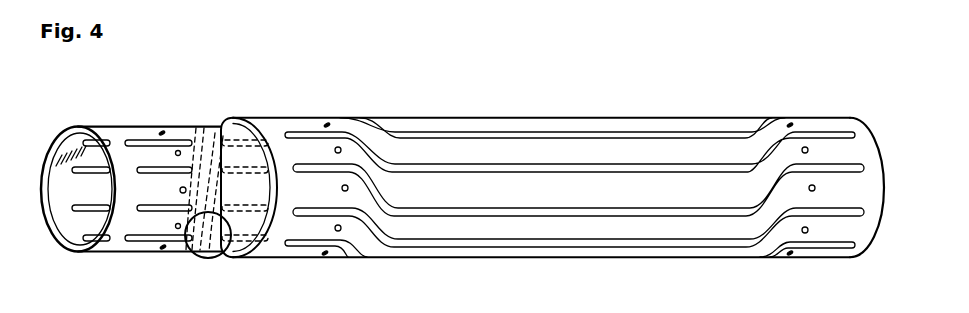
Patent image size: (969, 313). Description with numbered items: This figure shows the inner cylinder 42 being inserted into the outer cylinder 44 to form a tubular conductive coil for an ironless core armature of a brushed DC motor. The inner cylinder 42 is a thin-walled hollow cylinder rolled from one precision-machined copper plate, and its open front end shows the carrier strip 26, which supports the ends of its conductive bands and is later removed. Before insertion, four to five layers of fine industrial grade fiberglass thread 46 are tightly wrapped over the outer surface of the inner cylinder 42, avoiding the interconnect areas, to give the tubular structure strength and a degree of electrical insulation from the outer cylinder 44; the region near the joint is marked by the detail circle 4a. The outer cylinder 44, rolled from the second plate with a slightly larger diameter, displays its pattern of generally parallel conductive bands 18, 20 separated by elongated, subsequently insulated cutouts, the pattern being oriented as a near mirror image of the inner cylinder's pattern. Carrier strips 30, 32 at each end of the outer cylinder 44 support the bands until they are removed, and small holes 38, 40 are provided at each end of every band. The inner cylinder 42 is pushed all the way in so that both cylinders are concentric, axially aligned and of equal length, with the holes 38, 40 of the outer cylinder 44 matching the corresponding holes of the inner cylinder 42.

The detail region of connection 4a is at (207, 259).
The conductive band 18 is at (528, 145).
The conductive band 20 is at (453, 125).
The carrier strip 26 is at (108, 248).
The carrier strip 30 is at (272, 254).
The carrier strip 32 is at (857, 248).
The hole 38 is at (801, 117).
The hole 40 is at (318, 122).
The inner cylinder 42 is at (83, 109).
The outer cylinder 44 is at (637, 84).
The thread 46 is at (197, 128).